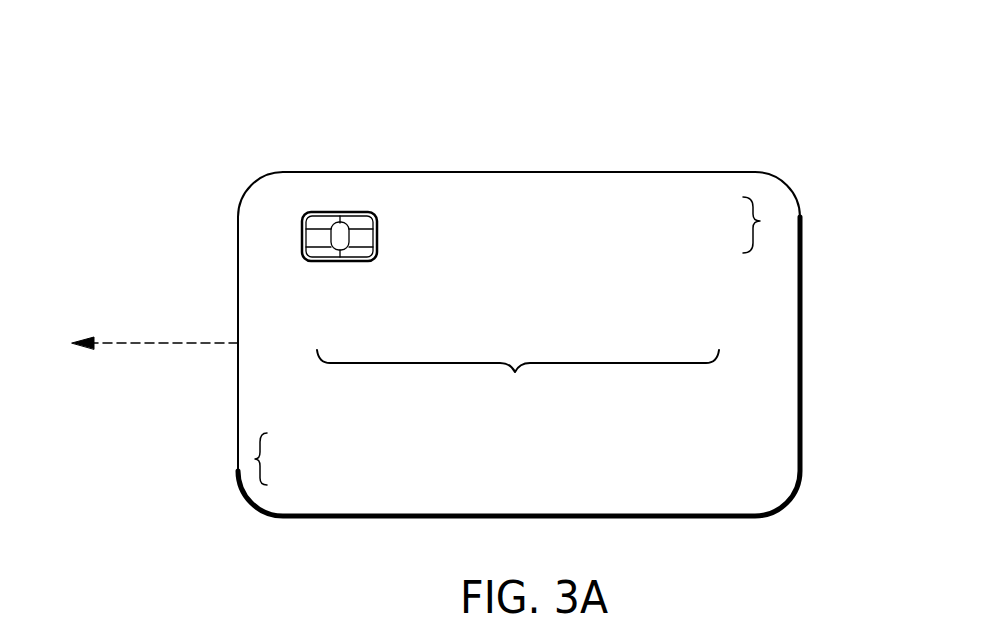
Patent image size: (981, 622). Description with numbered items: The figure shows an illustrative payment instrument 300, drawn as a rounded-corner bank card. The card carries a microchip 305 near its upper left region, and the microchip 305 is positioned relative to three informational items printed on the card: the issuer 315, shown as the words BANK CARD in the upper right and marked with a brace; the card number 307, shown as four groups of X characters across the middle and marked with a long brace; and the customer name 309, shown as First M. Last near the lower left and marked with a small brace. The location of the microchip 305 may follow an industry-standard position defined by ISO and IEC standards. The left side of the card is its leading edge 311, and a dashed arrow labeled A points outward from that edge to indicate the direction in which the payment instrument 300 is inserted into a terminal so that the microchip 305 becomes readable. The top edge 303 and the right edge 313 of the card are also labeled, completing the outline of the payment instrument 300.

The payment instrument 300 is at (140, 64).
The top edge of card 303 is at (714, 171).
The microchip 305 is at (338, 212).
The card number 307 is at (515, 372).
The customer name 309 is at (255, 459).
The leading edge 311 is at (237, 416).
The right edge of card 313 is at (802, 392).
The issuer 315 is at (760, 221).